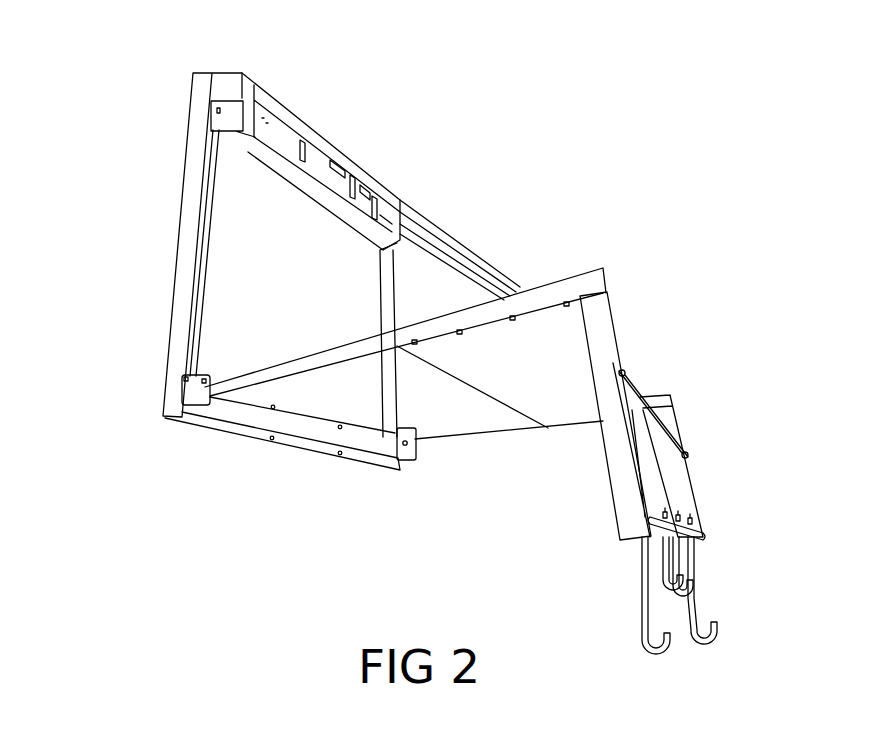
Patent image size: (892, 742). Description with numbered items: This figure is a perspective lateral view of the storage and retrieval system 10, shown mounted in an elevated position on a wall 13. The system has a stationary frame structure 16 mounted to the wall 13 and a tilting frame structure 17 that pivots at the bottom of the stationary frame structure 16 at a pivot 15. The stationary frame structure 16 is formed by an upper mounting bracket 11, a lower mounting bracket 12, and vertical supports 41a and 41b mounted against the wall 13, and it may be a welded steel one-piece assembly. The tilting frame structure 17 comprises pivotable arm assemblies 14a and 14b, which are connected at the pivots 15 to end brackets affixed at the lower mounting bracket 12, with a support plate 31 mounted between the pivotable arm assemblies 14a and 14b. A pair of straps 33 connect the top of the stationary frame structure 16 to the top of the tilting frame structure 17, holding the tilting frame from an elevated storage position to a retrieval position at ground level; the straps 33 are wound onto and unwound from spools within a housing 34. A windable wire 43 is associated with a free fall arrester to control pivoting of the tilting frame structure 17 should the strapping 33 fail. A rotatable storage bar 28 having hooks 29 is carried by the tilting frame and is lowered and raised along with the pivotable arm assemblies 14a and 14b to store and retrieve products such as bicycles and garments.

The storage and retrieval system 10 is at (567, 224).
The upper mounting bracket 11 is at (206, 95).
The lower mounting bracket 12 is at (203, 417).
The wall 13 is at (100, 491).
The pivotable arm assembly 14a is at (618, 276).
The pivotable arm assembly 14b is at (691, 401).
The pivot 15 is at (190, 375).
The stationary frame structure 16 is at (170, 161).
The tilting frame structure 17 is at (662, 351).
The rotatable storage bar 28 is at (692, 527).
The hooks 29 is at (698, 565).
The support plate 31 is at (573, 400).
The straps 33 is at (410, 228).
The housing 34 is at (328, 147).
The vertical support 41a is at (200, 242).
The vertical support 41b is at (388, 286).
The windable wire 43 is at (440, 243).